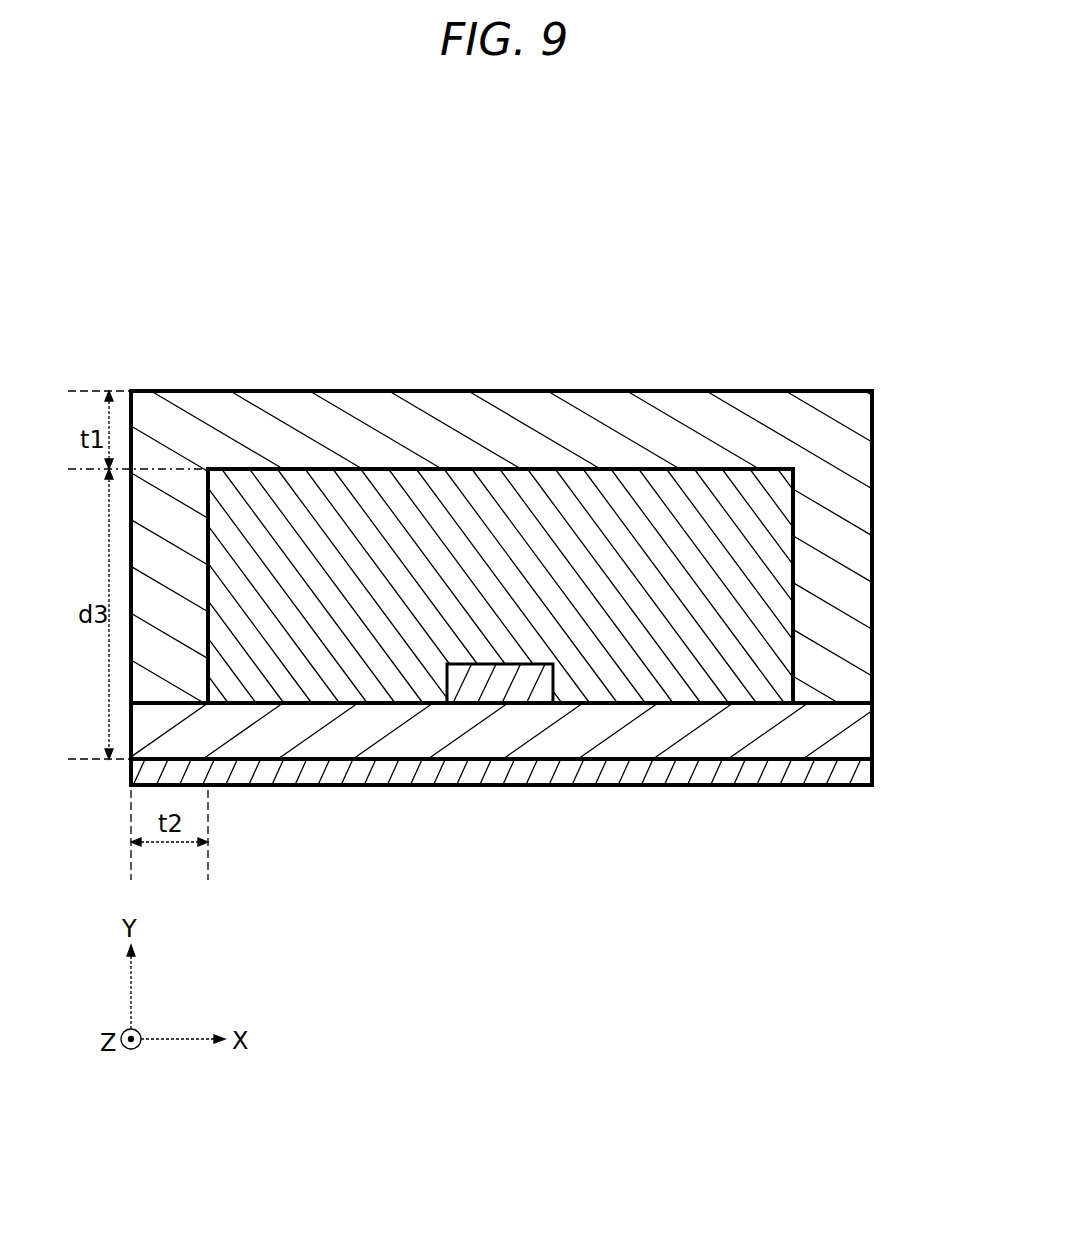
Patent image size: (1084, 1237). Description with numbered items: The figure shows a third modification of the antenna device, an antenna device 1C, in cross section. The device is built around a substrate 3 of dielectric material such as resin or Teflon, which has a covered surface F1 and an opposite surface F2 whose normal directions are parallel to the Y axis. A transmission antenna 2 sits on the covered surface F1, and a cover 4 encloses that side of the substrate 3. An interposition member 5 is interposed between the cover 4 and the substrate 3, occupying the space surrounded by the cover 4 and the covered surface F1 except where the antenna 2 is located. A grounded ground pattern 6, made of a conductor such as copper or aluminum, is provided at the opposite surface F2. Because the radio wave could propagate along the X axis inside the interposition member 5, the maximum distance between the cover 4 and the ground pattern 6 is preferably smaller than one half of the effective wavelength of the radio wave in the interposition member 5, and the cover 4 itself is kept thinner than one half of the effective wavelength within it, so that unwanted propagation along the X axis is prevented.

The antenna device 1C is at (788, 294).
The transmission antenna 2 is at (535, 703).
The substrate 3 is at (872, 733).
The cover 4 is at (872, 515).
The interposition member 5 is at (623, 703).
The ground pattern 6 is at (650, 785).
The covered surface F1 is at (748, 700).
The opposite surface F2 is at (747, 762).